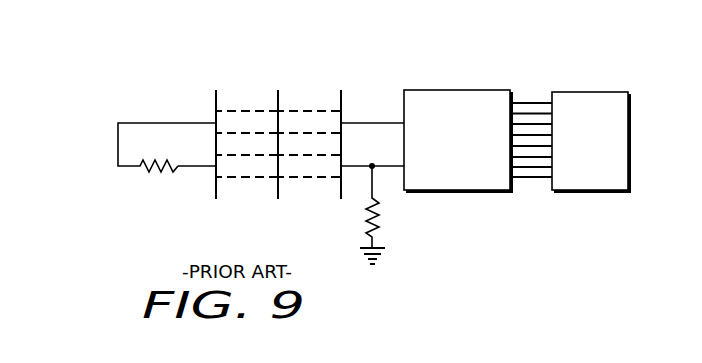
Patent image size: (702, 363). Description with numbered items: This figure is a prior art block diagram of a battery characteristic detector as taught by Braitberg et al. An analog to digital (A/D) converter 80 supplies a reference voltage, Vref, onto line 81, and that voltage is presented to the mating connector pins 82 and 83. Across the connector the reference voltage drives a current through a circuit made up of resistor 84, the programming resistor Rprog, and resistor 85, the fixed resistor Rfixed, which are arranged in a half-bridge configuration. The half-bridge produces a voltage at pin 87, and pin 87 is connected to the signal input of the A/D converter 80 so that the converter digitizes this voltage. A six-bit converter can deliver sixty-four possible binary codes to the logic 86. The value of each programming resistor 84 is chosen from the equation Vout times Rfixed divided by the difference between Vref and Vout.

The analog to digital (A/D) converter 80 is at (477, 90).
The line 81 is at (372, 123).
The mating connector pin 82 is at (317, 86).
The mating connector pin 83 is at (233, 88).
The resistor (Rprog) 84 is at (153, 170).
The resistor (Rfixed) 85 is at (385, 214).
The logic 86 is at (593, 92).
The pin 87 is at (202, 163).